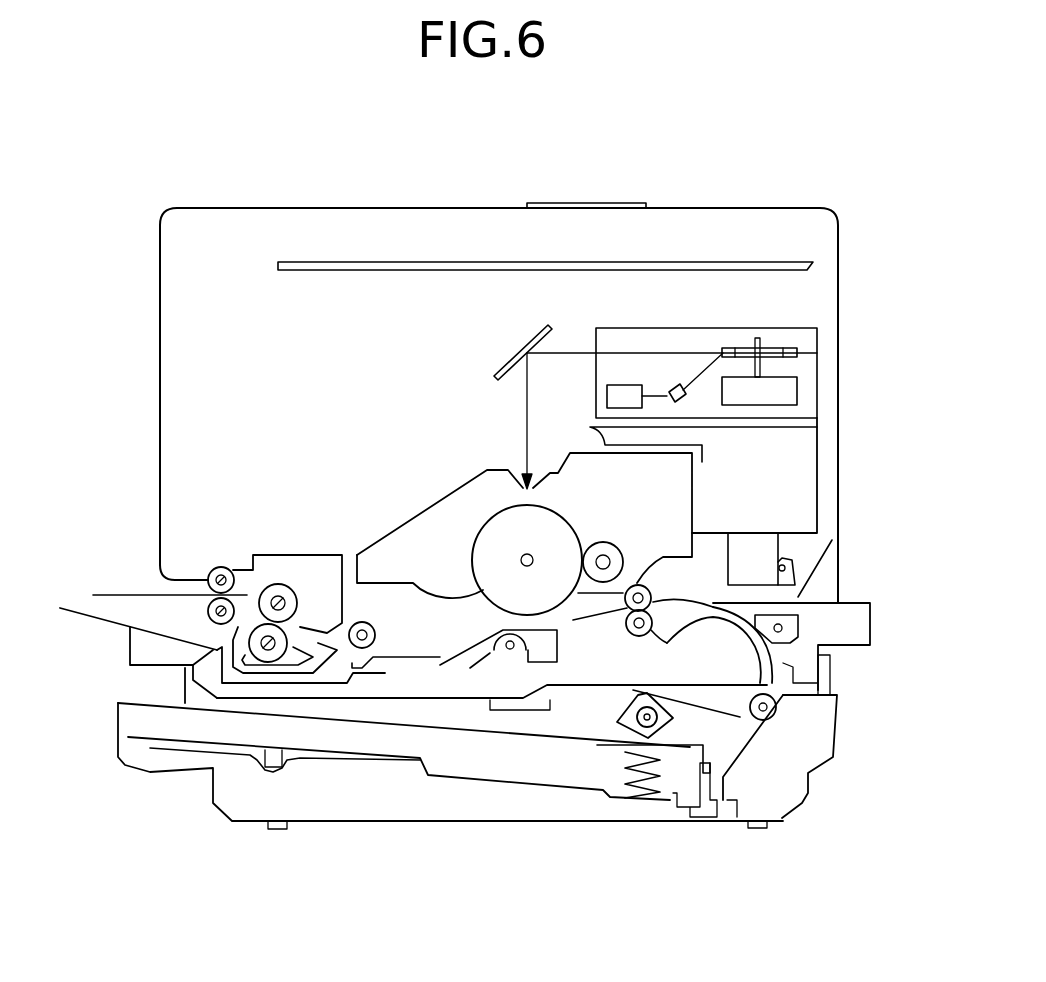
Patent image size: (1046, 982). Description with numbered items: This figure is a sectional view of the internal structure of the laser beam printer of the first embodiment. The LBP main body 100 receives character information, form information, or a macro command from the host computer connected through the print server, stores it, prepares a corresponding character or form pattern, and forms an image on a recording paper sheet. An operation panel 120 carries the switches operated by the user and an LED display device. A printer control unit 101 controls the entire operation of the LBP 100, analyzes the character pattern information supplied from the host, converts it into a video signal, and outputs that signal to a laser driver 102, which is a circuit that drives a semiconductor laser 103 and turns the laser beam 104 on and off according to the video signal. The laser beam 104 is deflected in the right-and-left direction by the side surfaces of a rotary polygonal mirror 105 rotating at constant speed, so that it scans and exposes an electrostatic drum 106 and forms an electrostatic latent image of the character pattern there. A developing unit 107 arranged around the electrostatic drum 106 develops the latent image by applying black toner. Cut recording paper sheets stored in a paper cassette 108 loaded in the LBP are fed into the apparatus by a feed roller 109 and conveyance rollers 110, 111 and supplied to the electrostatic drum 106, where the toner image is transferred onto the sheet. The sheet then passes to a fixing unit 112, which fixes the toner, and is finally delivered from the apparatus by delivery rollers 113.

The LBP main body 100 is at (762, 207).
The printer control unit 101 is at (812, 263).
The laser driver 102 is at (607, 396).
The semiconductor laser 103 is at (684, 402).
The laser beam 104 is at (620, 353).
The rotary polygonal mirror 105 is at (797, 352).
The electrostatic drum 106 is at (490, 515).
The developing unit 107 is at (647, 510).
The paper cassette 108 is at (118, 735).
The feed roller 109 is at (603, 740).
The conveyance roller 110 is at (763, 722).
The conveyance roller 111 is at (630, 652).
The fixing unit 112 is at (278, 585).
The delivery rollers 113 is at (220, 567).
The operation panel 120 is at (612, 201).